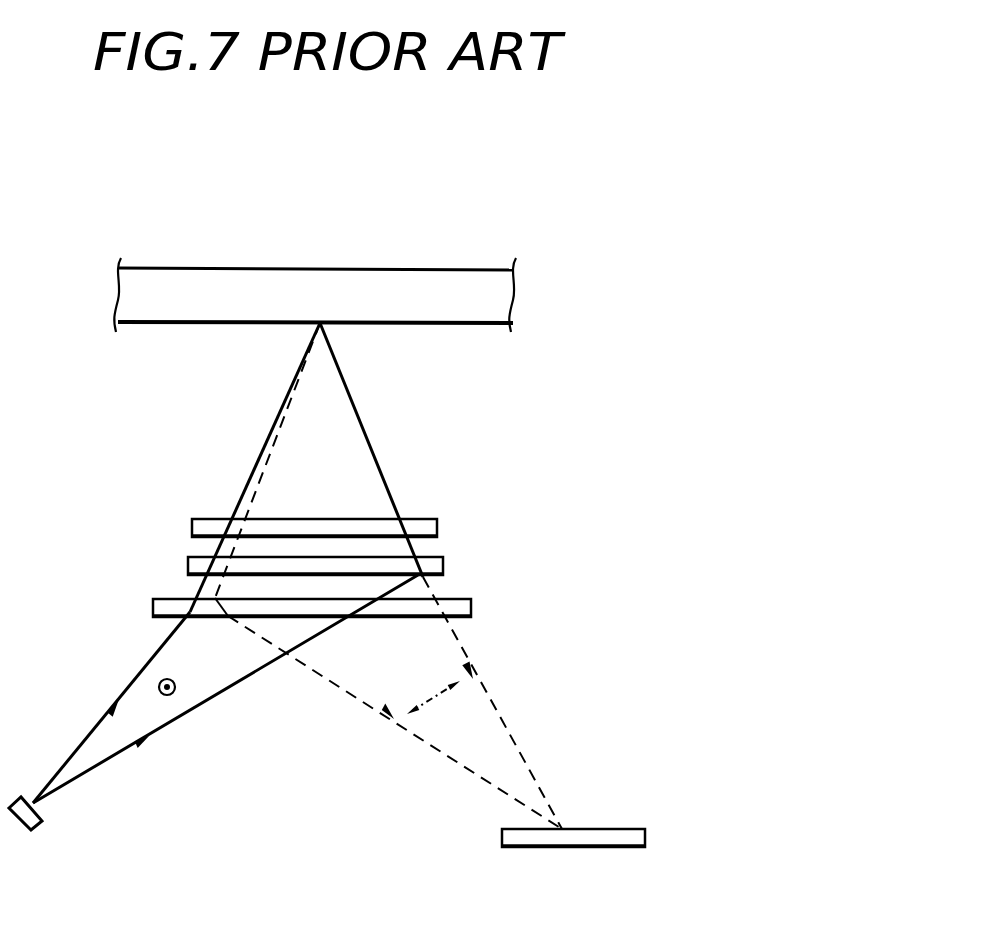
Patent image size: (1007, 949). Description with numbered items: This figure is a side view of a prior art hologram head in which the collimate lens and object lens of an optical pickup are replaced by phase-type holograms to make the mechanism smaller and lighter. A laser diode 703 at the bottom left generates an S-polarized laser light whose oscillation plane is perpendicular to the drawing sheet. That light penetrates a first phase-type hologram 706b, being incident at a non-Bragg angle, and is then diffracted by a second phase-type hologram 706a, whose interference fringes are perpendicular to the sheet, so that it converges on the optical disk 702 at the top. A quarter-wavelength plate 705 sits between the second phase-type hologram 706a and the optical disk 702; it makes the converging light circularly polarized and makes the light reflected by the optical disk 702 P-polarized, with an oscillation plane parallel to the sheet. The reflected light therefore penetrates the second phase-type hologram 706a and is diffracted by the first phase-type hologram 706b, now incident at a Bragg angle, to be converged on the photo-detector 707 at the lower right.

The optical disk 702 is at (325, 268).
The laser diode 703 is at (37, 823).
The quarter-wavelength plate 705 is at (428, 528).
The second phase-type hologram 706a is at (437, 568).
The first phase-type hologram 706b is at (455, 608).
The photo-detector 707 is at (555, 840).